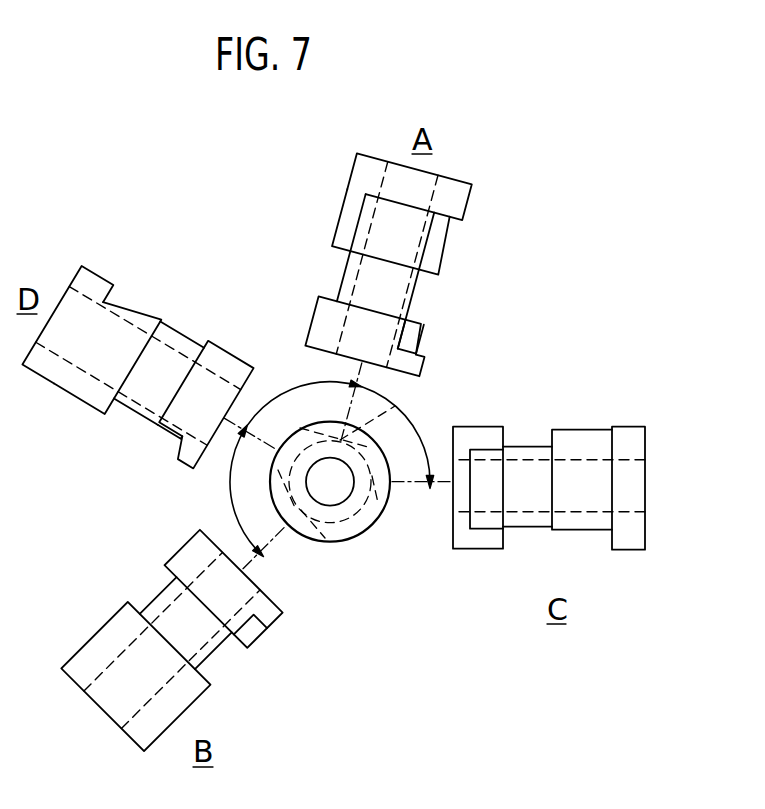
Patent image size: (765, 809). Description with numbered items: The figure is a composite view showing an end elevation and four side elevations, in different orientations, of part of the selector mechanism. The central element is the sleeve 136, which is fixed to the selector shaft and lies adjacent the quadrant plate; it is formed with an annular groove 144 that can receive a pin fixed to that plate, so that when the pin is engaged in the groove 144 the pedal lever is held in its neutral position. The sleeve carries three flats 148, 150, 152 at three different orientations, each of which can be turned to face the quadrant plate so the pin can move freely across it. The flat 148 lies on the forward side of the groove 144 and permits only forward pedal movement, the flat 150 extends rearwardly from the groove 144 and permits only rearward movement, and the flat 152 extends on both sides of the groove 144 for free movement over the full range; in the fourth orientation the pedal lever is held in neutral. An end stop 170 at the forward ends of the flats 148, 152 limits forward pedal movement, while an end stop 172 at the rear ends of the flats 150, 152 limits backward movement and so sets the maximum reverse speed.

The sleeve 136 is at (357, 539).
The annular groove 144 is at (343, 276).
The flat 148 is at (394, 407).
The flat 150 is at (307, 524).
The flat 152 is at (385, 498).
The end stop 170 is at (462, 226).
The end stop 172 is at (423, 358).